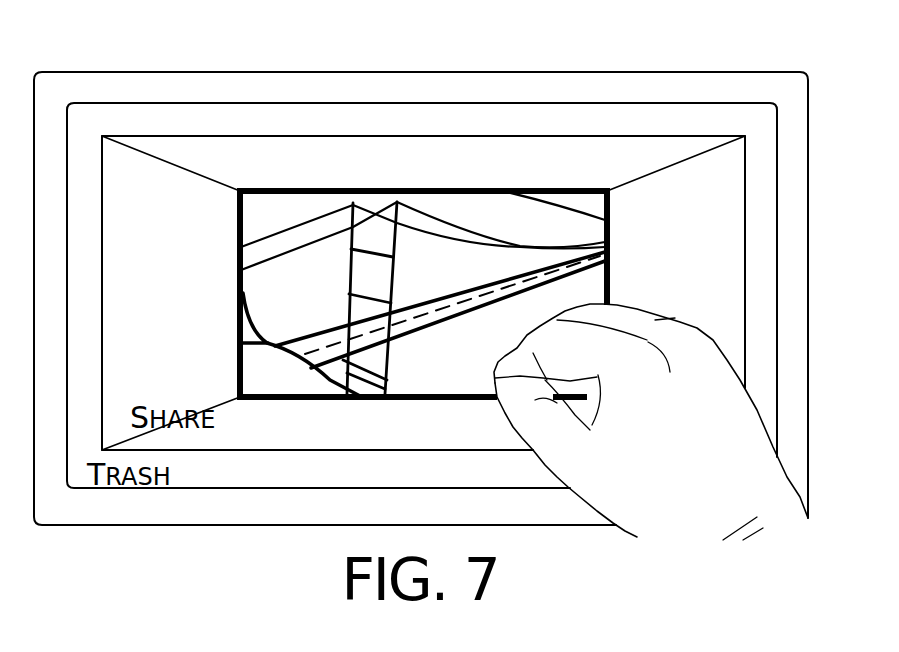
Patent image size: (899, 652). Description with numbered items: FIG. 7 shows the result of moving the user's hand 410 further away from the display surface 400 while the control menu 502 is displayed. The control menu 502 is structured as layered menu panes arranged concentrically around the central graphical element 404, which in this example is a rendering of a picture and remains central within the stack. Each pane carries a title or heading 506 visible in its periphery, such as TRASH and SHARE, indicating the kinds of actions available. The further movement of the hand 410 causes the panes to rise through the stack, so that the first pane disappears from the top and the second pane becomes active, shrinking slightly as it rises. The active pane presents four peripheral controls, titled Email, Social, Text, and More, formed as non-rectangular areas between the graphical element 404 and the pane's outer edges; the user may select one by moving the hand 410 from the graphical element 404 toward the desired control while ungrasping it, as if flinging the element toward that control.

The display surface 400 is at (176, 72).
The control menu 502 is at (619, 90).
The title or heading 506 is at (89, 529).
The graphical element 404 is at (245, 207).
The hand 410 is at (643, 532).